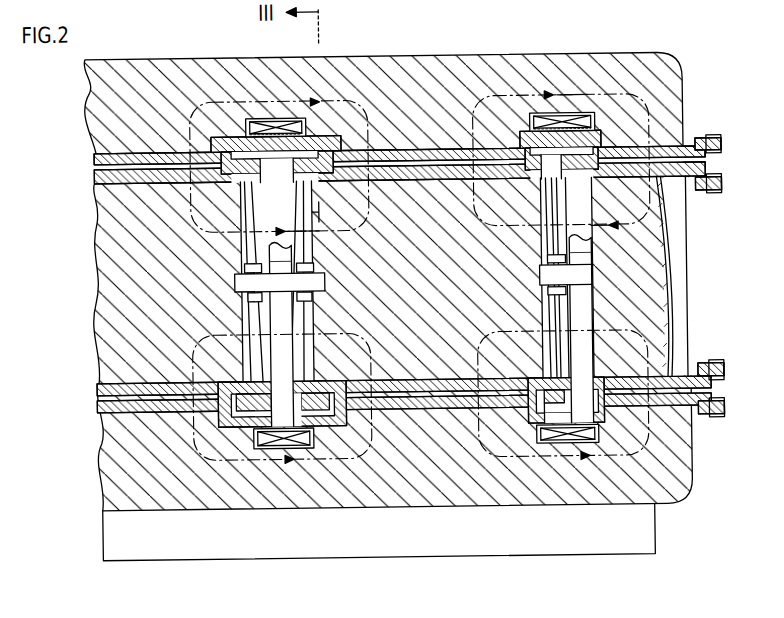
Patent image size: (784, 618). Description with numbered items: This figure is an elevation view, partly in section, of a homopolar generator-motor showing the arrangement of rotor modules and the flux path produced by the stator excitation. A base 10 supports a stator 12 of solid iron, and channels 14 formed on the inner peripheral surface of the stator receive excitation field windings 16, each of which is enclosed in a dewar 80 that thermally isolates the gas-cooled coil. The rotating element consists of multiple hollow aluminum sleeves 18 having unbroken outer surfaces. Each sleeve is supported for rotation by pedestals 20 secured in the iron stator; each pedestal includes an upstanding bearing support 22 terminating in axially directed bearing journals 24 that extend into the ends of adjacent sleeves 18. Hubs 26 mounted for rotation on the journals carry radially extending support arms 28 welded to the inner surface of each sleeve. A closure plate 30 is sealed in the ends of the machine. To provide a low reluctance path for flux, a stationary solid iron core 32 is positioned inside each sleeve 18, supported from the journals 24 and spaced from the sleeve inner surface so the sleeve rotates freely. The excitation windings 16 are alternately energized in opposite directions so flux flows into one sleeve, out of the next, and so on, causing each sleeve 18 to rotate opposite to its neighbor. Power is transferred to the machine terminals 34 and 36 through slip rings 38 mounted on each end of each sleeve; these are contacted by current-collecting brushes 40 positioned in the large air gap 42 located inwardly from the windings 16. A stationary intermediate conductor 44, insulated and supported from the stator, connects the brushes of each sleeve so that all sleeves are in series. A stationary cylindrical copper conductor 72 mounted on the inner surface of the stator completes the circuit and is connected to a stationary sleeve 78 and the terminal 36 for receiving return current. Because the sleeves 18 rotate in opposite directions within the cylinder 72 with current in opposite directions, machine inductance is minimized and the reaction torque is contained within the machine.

The base 10 is at (411, 539).
The stator 12 is at (412, 56).
The channels 14 is at (411, 124).
The excitation field windings 16 is at (264, 117).
The hollow aluminum sleeves 18 is at (98, 184).
The pedestals 20 is at (292, 363).
The bearing support 22 is at (292, 327).
The bearing journals 24 is at (326, 291).
The hubs 26 is at (246, 268).
The support arms 28 is at (250, 232).
The closure plate 30 is at (669, 254).
The solid iron core 32 is at (96, 315).
The machine terminal 34 is at (724, 148).
The machine terminal 36 is at (724, 188).
The slip rings 38 is at (265, 171).
The current-collecting brushes 40 is at (239, 181).
The air gap 42 is at (234, 135).
The intermediate conductor 44 is at (320, 140).
The cylindrical conductor 72 is at (677, 147).
The stationary sleeve 78 is at (688, 208).
The dewar 80 is at (280, 117).